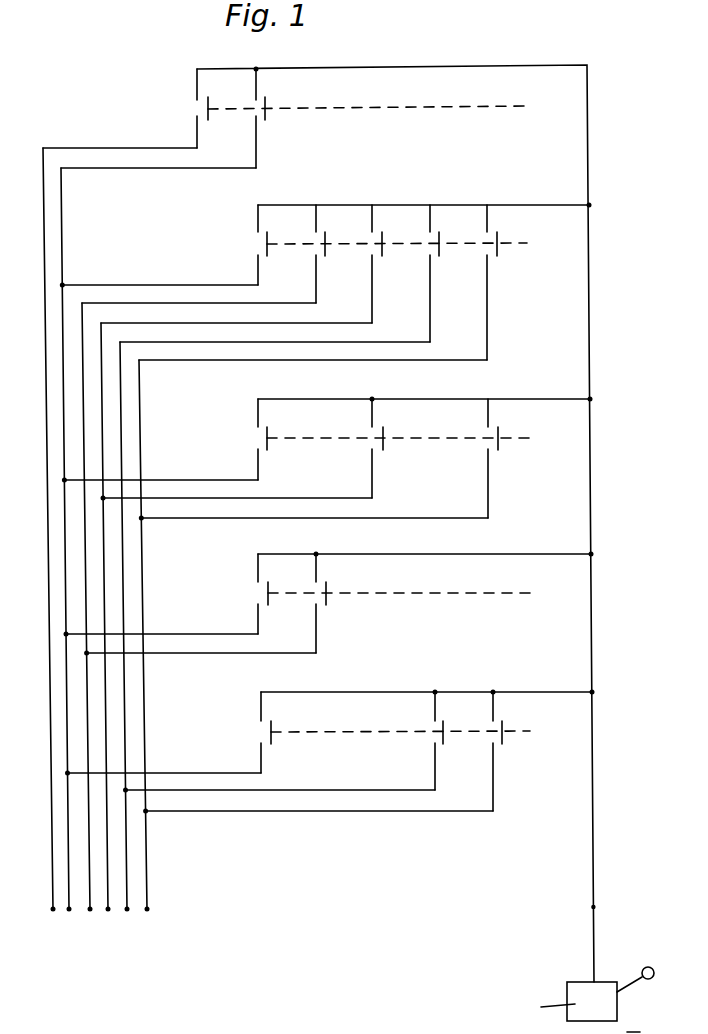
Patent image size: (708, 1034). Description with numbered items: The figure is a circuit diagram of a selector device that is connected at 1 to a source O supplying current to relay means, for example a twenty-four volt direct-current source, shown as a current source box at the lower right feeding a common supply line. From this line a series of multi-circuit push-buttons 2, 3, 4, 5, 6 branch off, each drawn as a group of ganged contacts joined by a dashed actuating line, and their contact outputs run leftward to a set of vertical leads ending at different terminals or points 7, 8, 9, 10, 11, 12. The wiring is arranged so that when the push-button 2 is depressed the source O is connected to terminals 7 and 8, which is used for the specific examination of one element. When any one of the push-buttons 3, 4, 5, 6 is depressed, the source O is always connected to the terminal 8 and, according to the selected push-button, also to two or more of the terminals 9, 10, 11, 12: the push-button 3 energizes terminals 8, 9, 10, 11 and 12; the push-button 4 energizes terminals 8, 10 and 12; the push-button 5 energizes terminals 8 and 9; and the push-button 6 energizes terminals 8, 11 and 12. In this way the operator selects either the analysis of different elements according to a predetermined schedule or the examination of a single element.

The connection to current source 1 is at (593, 907).
The multi-circuit push-button 2 is at (528, 106).
The multi-circuit push-button 3 is at (527, 243).
The multi-circuit push-button 4 is at (530, 438).
The multi-circuit push-button 5 is at (533, 593).
The multi-circuit push-button 6 is at (530, 731).
The terminal 7 is at (53, 909).
The terminal 8 is at (69, 909).
The terminal 9 is at (90, 909).
The terminal 10 is at (108, 909).
The terminal 11 is at (127, 909).
The terminal 12 is at (147, 909).